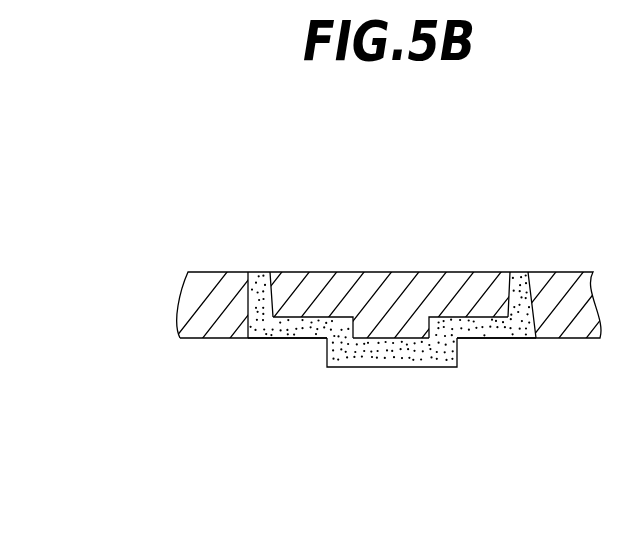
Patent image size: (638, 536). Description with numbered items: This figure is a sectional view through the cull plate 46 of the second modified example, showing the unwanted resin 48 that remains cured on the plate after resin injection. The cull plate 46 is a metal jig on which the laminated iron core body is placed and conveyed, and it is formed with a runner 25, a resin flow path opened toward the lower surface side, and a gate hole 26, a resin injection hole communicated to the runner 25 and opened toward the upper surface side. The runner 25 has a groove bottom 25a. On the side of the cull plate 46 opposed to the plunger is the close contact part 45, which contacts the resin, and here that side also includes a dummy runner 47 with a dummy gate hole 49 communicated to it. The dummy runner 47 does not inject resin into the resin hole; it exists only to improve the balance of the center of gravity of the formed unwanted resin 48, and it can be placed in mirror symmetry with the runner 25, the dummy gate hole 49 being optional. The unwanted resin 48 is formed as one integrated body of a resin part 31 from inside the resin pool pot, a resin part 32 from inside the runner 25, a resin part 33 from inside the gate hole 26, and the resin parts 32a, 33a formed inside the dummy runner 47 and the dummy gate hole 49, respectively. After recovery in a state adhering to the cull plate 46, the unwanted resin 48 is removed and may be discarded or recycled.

The runner 25 is at (319, 305).
The groove bottom 25a is at (278, 300).
The gate hole 26 is at (223, 283).
The resin part 31 is at (377, 352).
The resin part 32 is at (274, 338).
The resin part 32a is at (487, 330).
The resin part 33 is at (248, 307).
The resin part 33a is at (532, 313).
The close contact part 45 is at (414, 350).
The cull plate 46 is at (158, 321).
The dummy runner 47 is at (474, 316).
The unwanted resin 48 is at (334, 380).
The dummy gate hole 49 is at (517, 303).